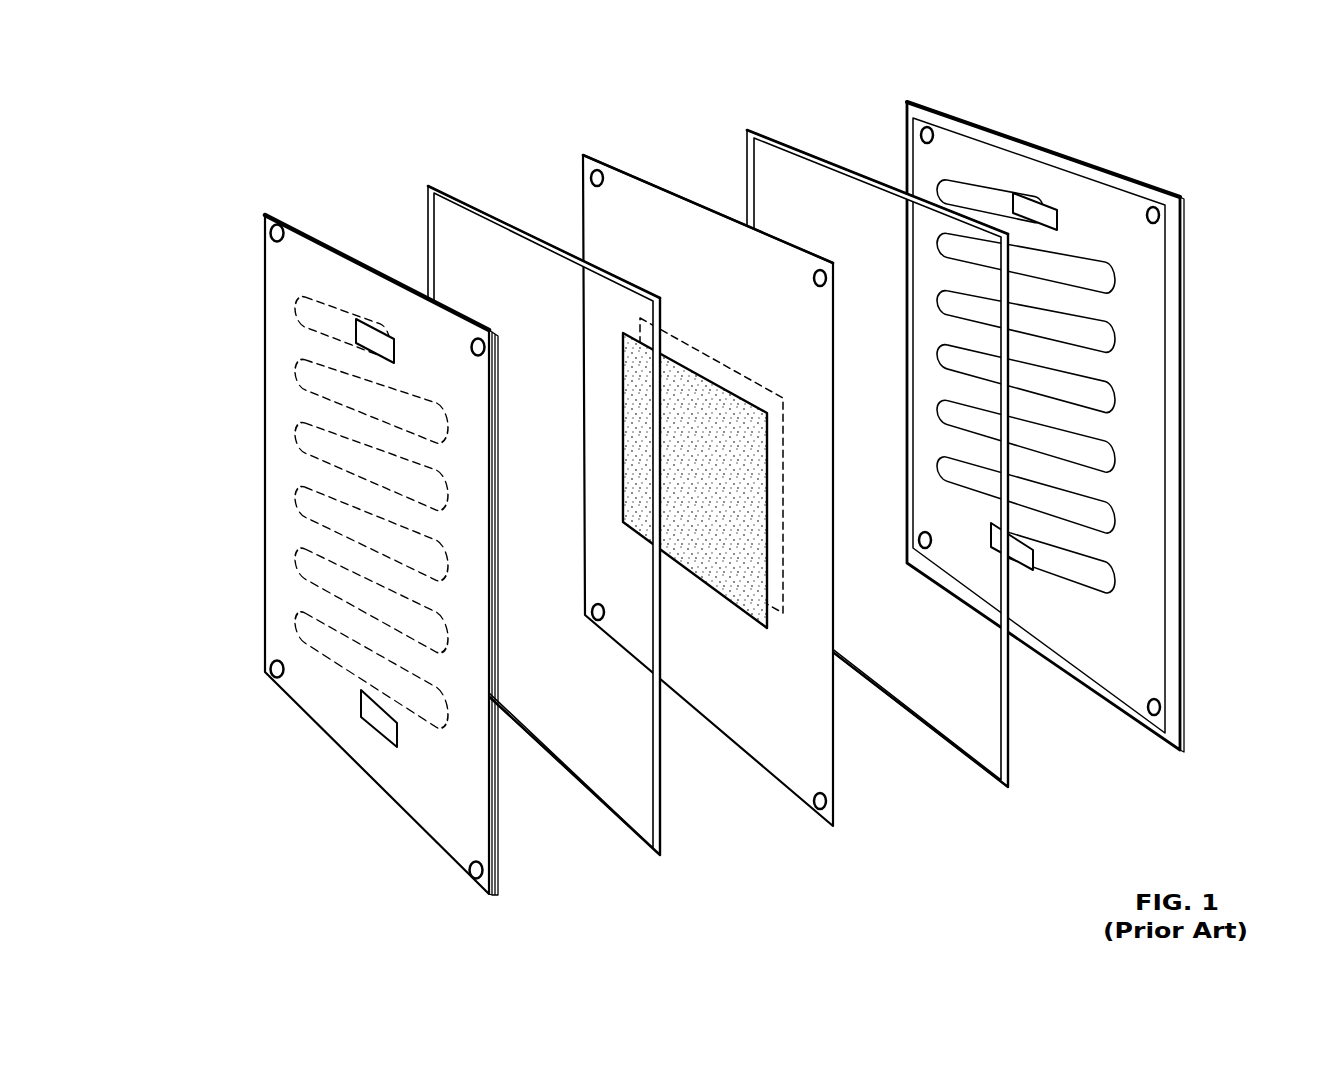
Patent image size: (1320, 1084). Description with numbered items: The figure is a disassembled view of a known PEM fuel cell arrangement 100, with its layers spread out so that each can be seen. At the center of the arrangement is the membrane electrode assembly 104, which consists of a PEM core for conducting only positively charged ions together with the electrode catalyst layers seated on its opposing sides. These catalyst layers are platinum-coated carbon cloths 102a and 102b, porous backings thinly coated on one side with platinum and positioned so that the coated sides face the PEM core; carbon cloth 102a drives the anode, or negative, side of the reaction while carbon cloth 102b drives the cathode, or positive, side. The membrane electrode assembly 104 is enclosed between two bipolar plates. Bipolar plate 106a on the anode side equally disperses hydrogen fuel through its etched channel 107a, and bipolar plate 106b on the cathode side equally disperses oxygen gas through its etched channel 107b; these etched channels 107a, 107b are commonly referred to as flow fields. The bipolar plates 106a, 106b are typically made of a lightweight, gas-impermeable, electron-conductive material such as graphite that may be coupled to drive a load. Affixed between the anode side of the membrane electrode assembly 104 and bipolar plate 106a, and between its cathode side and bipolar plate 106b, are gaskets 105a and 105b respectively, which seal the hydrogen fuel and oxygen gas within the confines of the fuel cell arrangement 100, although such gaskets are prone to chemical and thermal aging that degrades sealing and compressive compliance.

The fuel cell arrangement 100 is at (302, 112).
The platinum-coated carbon cloth 102a is at (728, 602).
The platinum-coated carbon cloth 102b is at (783, 571).
The membrane electrode assembly (MEA) 104 is at (797, 763).
The gasket 105a is at (627, 833).
The gasket 105b is at (975, 773).
The bipolar plate 106a is at (329, 555).
The bipolar plate 106b is at (1091, 444).
The etched channel 107a is at (298, 493).
The etched channel 107b is at (1118, 523).